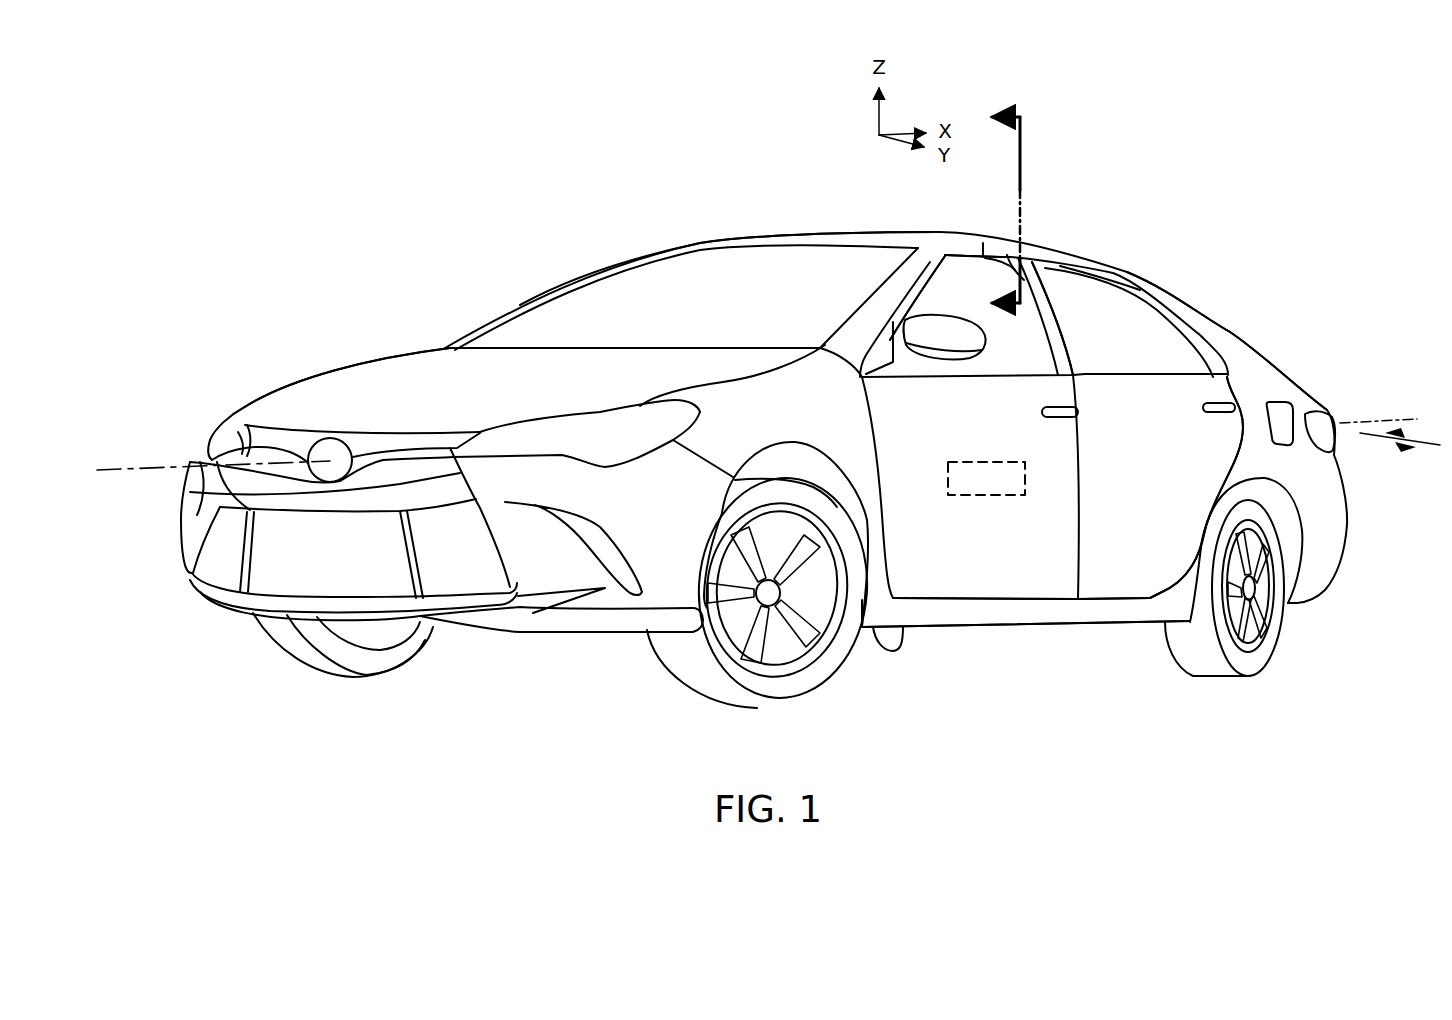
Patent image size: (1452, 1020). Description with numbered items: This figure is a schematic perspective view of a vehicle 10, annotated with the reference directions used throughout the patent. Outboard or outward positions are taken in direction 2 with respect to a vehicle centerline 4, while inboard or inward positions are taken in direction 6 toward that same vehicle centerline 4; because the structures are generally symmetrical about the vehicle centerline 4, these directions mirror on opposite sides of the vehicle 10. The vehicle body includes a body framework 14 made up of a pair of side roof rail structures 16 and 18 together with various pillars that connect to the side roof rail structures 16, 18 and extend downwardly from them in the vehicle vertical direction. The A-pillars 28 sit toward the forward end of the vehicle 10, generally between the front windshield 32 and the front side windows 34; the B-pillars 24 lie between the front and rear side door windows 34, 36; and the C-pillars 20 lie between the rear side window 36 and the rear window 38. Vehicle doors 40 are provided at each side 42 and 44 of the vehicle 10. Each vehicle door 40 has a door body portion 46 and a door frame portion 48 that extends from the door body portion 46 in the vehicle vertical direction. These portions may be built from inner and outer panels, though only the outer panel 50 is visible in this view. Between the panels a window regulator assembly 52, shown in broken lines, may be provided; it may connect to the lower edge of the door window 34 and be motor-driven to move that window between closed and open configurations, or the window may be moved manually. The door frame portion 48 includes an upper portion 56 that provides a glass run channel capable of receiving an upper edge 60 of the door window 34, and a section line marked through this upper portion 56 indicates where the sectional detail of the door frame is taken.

The direction 2 is at (1373, 474).
The vehicle centerline 4 is at (1363, 422).
The direction 6 is at (1408, 437).
The vehicle 10 is at (1322, 264).
The body framework 14 is at (1103, 214).
The side roof rail structure 16 is at (770, 226).
The side roof rail structure 18 is at (1028, 226).
The C-pillar 20 is at (1191, 304).
The B-pillar 24 is at (1070, 349).
The A-pillar 28 is at (877, 310).
The front windshield 32 is at (608, 284).
The front side window 34 is at (939, 276).
The rear side window 36 is at (1110, 294).
The rear window 38 is at (1236, 313).
The vehicle door 40 is at (1026, 582).
The side 42 is at (498, 264).
The side 44 is at (924, 660).
The door body portion 46 is at (980, 598).
The door frame portion 48 is at (1042, 253).
The outer panel 50 is at (1053, 521).
The window regulator assembly 52 is at (952, 496).
The upper portion 56 is at (984, 257).
The upper edge 60 is at (1011, 260).